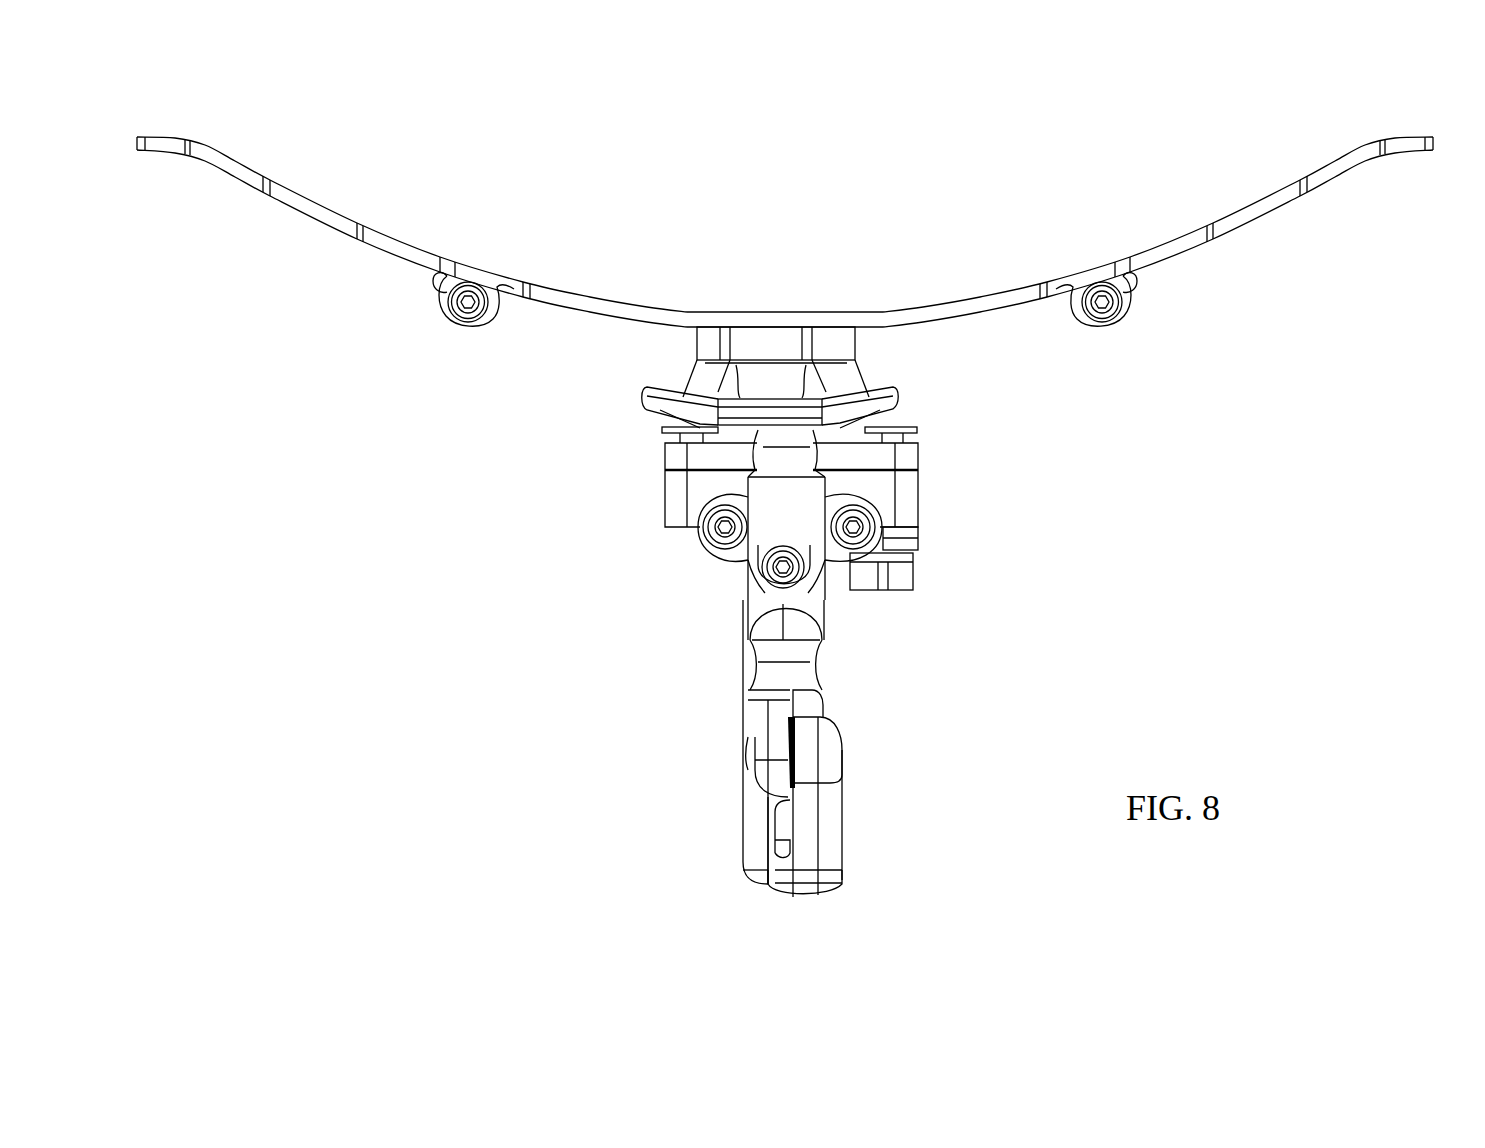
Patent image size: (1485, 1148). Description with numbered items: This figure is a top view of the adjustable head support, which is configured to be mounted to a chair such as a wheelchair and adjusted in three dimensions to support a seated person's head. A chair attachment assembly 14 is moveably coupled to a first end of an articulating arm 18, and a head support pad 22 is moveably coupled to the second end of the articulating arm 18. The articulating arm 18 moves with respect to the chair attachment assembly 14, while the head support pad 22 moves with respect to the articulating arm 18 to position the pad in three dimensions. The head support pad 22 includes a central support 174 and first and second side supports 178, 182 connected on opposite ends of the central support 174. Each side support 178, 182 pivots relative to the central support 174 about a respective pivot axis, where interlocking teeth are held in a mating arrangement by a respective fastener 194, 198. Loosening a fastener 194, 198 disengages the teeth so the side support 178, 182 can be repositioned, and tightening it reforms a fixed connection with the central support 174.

The chair attachment assembly 14 is at (935, 462).
The articulating arm 18 is at (712, 743).
The head support pad 22 is at (689, 203).
The central support 174 is at (868, 311).
The first side support 178 is at (262, 172).
The second side support 182 is at (1265, 193).
The fastener 194 is at (473, 290).
The fastener 198 is at (1098, 290).